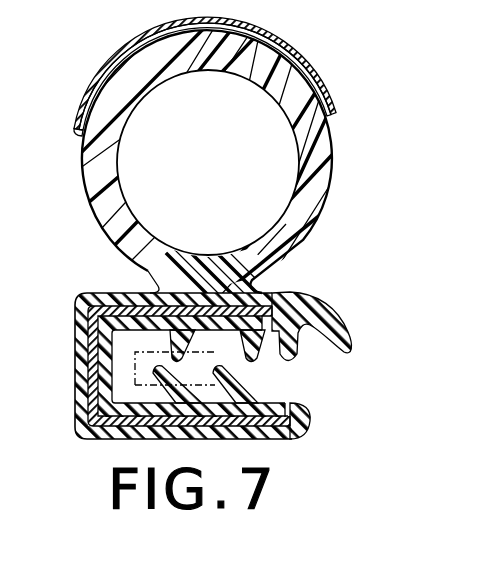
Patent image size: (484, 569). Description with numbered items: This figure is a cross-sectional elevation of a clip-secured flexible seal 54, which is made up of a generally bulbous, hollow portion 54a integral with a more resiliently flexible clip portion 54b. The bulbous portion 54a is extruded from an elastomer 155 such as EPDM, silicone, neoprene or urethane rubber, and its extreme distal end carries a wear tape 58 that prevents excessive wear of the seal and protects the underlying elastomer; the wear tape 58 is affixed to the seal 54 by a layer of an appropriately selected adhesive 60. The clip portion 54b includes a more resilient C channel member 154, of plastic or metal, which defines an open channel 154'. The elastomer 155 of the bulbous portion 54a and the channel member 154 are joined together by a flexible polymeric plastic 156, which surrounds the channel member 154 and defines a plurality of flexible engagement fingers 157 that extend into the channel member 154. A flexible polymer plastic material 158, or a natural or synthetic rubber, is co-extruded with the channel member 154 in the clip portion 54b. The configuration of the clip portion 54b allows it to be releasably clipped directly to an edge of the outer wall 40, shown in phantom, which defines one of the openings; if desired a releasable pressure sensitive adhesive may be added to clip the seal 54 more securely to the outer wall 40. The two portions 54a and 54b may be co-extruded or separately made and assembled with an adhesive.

The flexible seal 54 is at (108, 270).
The bulbous hollow portion 54a is at (356, 1).
The clip portion 54b is at (366, 261).
The wear tape 58 is at (100, 72).
The adhesive 60 is at (80, 134).
The elastomer 155 is at (92, 163).
The flexible polymeric plastic 156 is at (80, 310).
The C channel member 154 is at (148, 366).
The open channel 154' is at (263, 406).
The flexible engagement fingers 157 is at (265, 370).
The flexible polymer plastic material 158 is at (293, 442).
The outer wall 40 is at (100, 443).